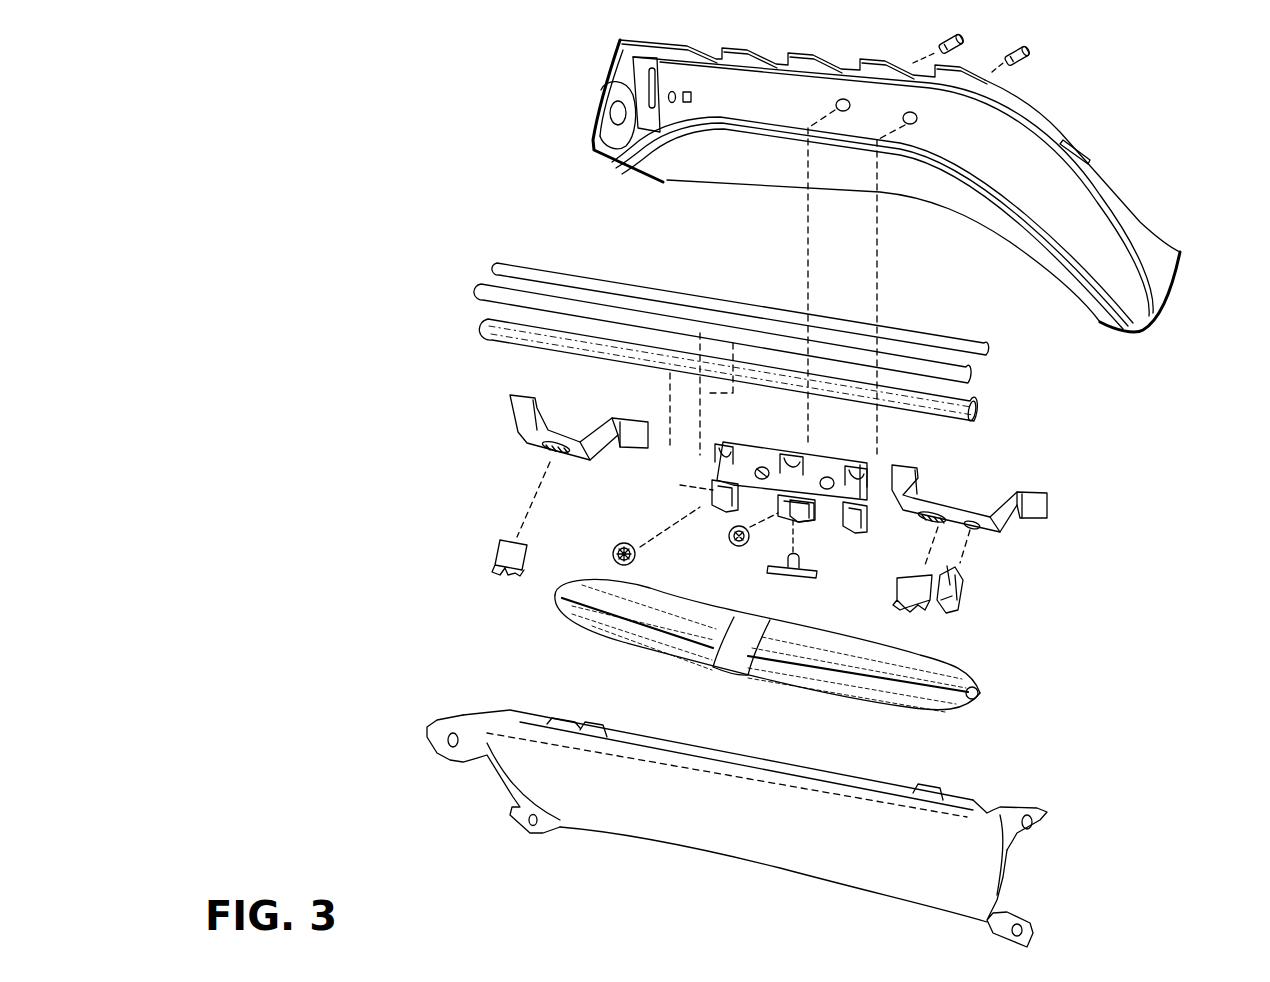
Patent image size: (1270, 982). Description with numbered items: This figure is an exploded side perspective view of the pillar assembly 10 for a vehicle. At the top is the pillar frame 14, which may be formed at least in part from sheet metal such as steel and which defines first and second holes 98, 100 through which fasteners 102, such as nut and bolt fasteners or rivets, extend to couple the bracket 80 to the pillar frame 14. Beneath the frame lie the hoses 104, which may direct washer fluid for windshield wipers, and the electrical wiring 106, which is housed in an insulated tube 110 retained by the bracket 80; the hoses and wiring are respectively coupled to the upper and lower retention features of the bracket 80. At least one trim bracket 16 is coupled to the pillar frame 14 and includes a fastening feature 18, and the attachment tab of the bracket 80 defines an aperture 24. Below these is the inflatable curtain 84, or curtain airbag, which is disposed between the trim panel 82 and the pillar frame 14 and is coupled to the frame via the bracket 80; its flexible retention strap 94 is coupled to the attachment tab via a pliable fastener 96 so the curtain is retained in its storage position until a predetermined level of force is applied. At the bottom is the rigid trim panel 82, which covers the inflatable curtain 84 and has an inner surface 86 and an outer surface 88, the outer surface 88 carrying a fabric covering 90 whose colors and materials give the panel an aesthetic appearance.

The pillar assembly 10 is at (250, 148).
The pillar frame 14 is at (1133, 197).
The trim bracket 16 is at (528, 428).
The fastening feature 18 is at (507, 553).
The aperture 24 is at (807, 517).
The bracket 80 is at (868, 486).
The trim panel 82 is at (753, 828).
The inflatable curtain 84 is at (943, 670).
The inner surface 86 is at (847, 780).
The outer surface 88 is at (980, 867).
The fabric covering 90 is at (770, 840).
The retention strap 94 is at (732, 657).
The pliable fastener 96 is at (770, 568).
The first hole 98 is at (837, 105).
The second hole 100 is at (913, 125).
The fasteners 102 is at (953, 36).
The hoses 104 is at (988, 353).
The electrical wiring 106 is at (542, 343).
The insulated tube 110 is at (978, 408).